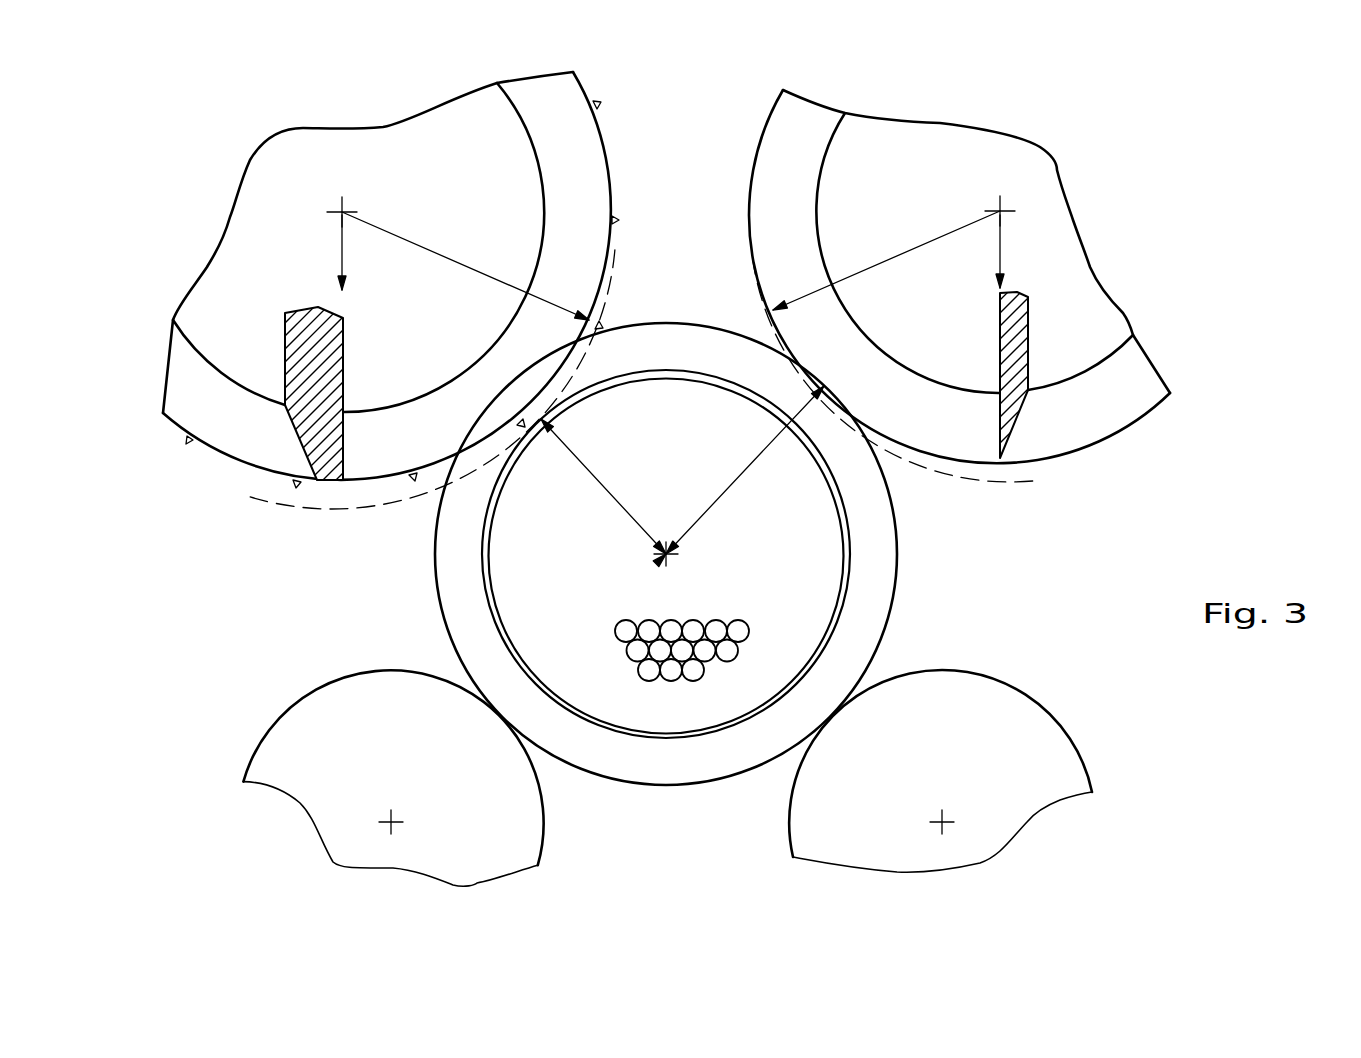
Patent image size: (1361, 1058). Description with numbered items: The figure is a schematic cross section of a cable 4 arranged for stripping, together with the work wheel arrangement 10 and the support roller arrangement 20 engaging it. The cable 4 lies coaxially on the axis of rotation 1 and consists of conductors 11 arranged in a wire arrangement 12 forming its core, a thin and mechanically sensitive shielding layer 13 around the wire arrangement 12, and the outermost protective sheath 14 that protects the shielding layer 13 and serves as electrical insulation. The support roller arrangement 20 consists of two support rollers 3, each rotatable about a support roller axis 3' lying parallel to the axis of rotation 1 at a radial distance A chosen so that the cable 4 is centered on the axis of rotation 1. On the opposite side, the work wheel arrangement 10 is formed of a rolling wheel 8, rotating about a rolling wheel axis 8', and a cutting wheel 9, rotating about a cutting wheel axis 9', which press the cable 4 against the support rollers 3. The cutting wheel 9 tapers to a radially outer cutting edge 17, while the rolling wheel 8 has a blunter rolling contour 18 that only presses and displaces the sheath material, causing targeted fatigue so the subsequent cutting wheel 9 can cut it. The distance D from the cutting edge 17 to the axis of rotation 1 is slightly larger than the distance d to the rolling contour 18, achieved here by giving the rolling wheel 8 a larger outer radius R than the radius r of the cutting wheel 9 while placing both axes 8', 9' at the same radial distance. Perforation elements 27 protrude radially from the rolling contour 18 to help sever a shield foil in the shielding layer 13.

The axis of rotation 1 is at (660, 556).
The support roller 3 is at (660, 778).
The support roller axis 3' is at (661, 737).
The cable 4 is at (435, 570).
The rolling wheel 8 is at (401, 327).
The rolling wheel axis 8' is at (402, 185).
The cutting wheel 9 is at (933, 338).
The cutting wheel axis 9' is at (951, 200).
The work wheel arrangement 10 is at (738, 100).
The conductor 11 is at (716, 630).
The wire arrangement 12 is at (662, 702).
The shielding layer 13 is at (847, 557).
The protective sheath 14 is at (843, 643).
The cutting edge 17 is at (1000, 458).
The rolling contour 18 is at (328, 482).
The support roller arrangement 20 is at (558, 867).
The perforation elements 27 is at (296, 483).